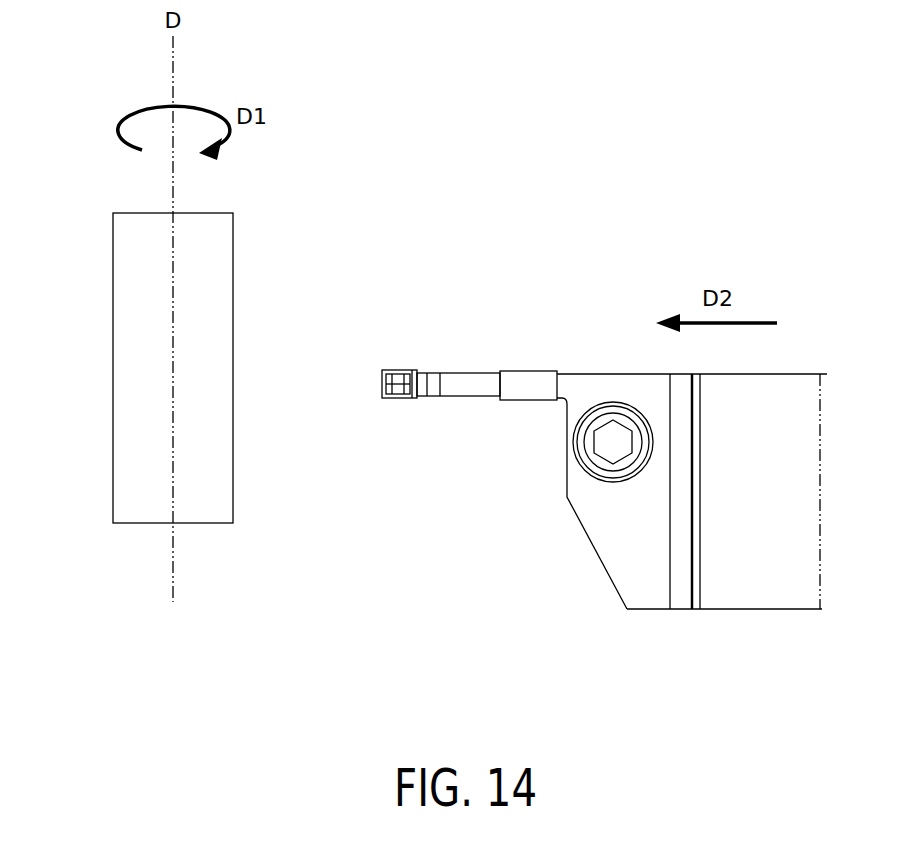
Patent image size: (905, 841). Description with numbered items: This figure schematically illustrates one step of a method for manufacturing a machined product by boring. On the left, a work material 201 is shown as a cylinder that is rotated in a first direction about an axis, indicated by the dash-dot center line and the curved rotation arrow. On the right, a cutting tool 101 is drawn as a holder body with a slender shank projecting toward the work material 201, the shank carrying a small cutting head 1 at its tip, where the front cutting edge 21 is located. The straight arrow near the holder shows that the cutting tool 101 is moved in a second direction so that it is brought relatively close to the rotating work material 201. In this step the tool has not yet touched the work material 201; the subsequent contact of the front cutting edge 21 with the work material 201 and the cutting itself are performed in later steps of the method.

The work material 201 is at (113, 282).
The cutting tool 1 is at (412, 373).
The front cutting edge 21 is at (380, 383).
The cutting tool 101 is at (736, 585).